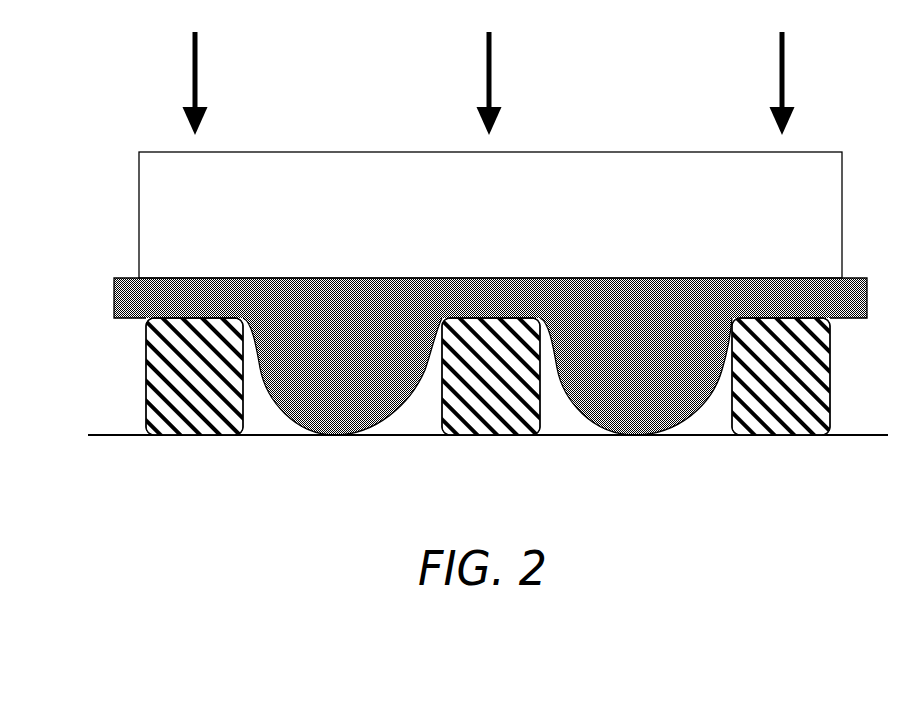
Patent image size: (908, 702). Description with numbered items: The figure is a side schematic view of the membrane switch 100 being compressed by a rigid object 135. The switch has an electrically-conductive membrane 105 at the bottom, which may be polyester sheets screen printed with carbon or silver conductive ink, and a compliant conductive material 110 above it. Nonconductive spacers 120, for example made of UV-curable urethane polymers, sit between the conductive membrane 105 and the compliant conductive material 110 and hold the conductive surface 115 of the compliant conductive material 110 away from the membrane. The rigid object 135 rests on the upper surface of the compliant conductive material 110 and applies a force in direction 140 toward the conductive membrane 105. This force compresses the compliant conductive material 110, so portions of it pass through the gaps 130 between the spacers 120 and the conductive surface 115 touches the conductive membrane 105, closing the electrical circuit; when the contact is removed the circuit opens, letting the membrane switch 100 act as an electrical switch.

The membrane switch 100 is at (116, 259).
The electrically-conductive membrane 105 is at (710, 437).
The compliant conductive material 110 is at (490, 332).
The conductive surface 115 is at (268, 392).
The spacer 120 is at (146, 378).
The gap 130 is at (556, 418).
The rigid object 135 is at (347, 172).
The direction 140 is at (193, 75).